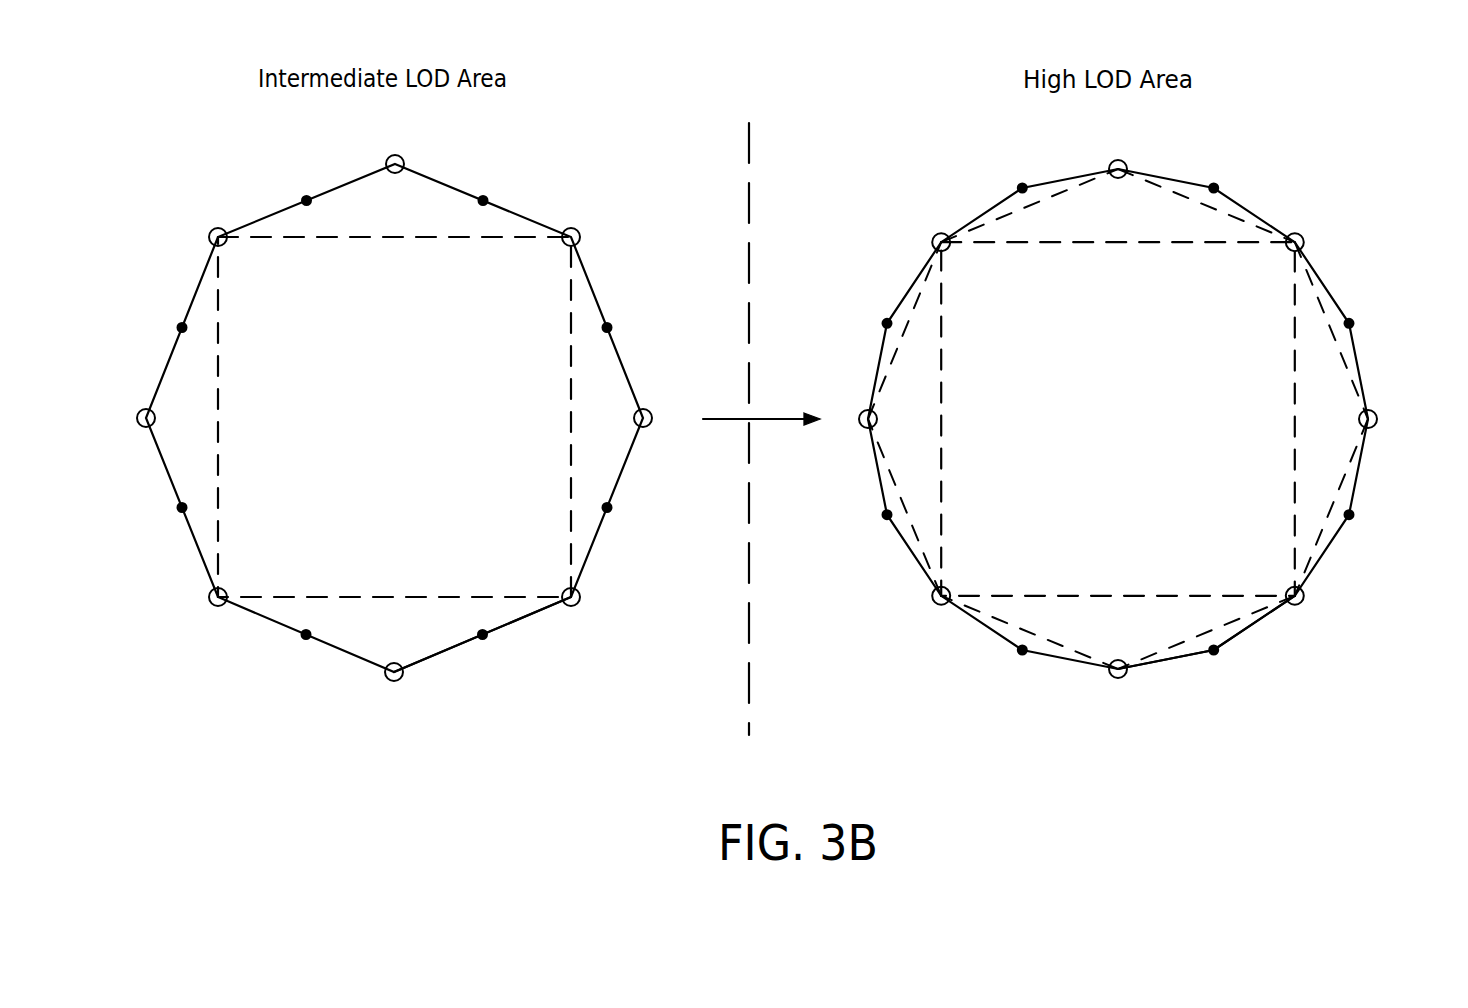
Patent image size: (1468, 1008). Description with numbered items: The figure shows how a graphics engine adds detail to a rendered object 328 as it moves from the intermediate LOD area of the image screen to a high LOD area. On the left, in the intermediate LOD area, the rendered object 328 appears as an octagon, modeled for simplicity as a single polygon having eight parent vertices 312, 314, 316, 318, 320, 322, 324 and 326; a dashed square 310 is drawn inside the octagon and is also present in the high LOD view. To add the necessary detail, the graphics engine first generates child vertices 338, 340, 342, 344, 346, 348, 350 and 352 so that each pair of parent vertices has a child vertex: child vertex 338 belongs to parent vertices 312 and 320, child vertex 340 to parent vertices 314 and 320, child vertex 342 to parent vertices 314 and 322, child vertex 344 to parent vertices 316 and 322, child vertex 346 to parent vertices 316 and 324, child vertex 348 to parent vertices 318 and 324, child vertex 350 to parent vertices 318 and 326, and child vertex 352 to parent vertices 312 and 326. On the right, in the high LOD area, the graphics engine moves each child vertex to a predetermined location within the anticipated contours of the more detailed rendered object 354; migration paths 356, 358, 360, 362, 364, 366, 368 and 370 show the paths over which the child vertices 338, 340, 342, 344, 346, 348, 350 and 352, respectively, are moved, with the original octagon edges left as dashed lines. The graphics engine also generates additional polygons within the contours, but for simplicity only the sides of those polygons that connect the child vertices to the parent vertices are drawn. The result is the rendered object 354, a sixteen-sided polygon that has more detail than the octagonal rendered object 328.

The area boundary (dashed square) 310 is at (425, 236).
The parent vertex 312 is at (217, 229).
The parent vertex 314 is at (574, 230).
The parent vertex 316 is at (581, 596).
The parent vertex 318 is at (209, 597).
The parent vertex 320 is at (391, 155).
The parent vertex 322 is at (653, 418).
The parent vertex 324 is at (397, 681).
The parent vertex 326 is at (138, 414).
The rendered object 328 is at (452, 648).
The child vertex 338 is at (306, 199).
The child vertex 340 is at (484, 199).
The child vertex 342 is at (609, 328).
The child vertex 344 is at (610, 508).
The child vertex 346 is at (485, 636).
The child vertex 348 is at (305, 637).
The child vertex 350 is at (180, 508).
The child vertex 352 is at (181, 325).
The rendered object 354 is at (1255, 628).
The migration path 356 is at (1030, 197).
The migration path 358 is at (1208, 197).
The migration path 360 is at (1331, 333).
The migration path 362 is at (1331, 509).
The migration path 364 is at (1207, 636).
The migration path 366 is at (1030, 636).
The migration path 368 is at (905, 509).
The migration path 370 is at (905, 335).